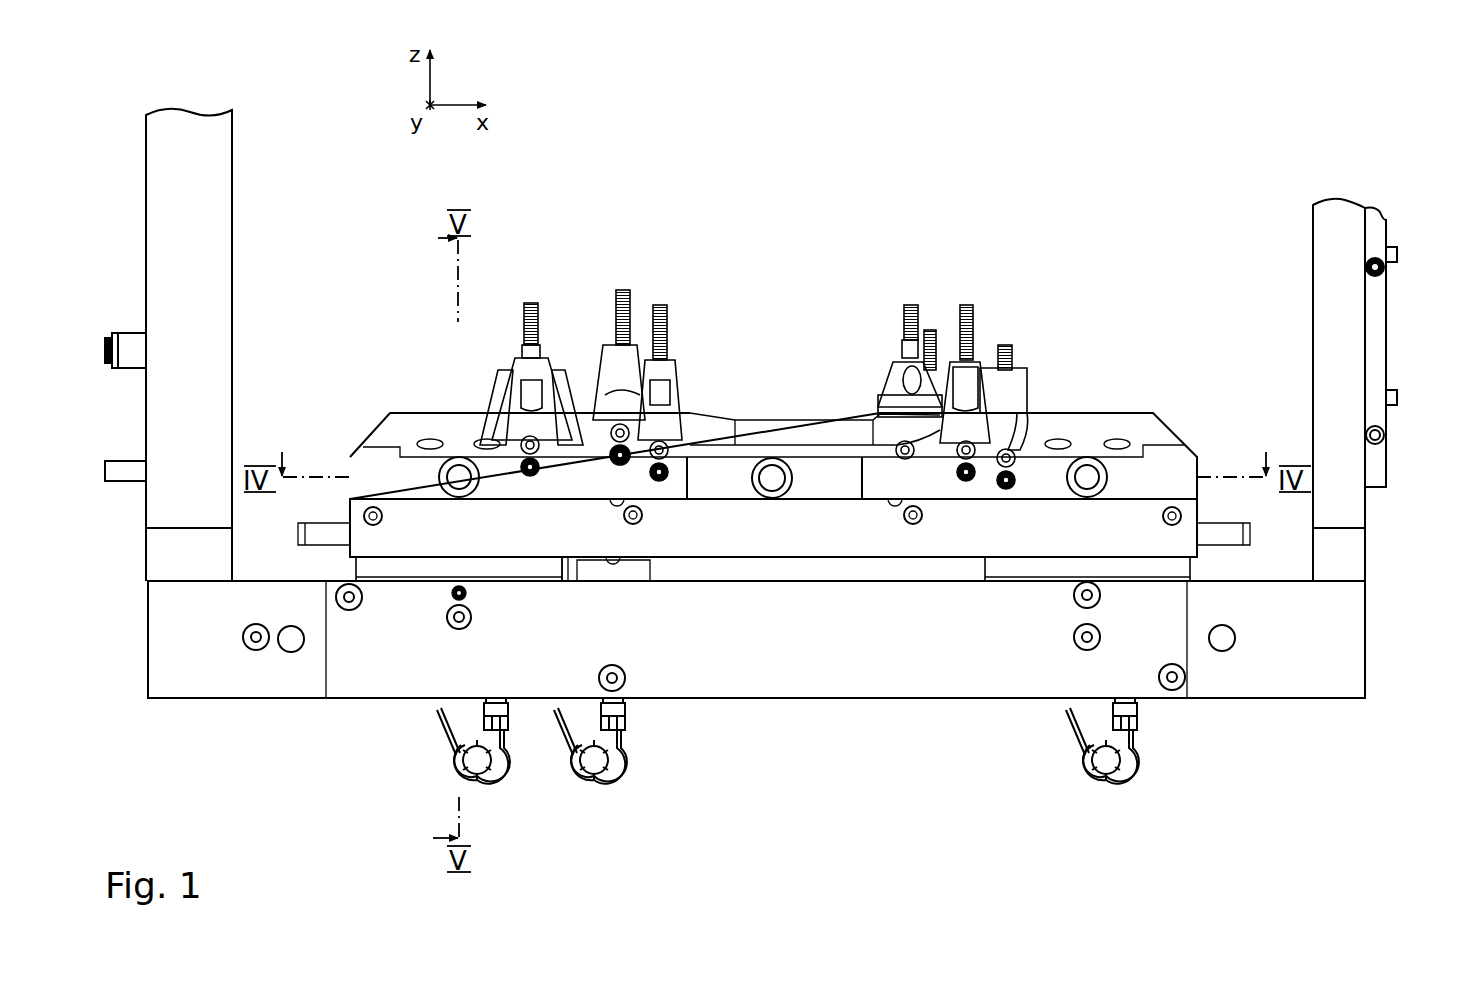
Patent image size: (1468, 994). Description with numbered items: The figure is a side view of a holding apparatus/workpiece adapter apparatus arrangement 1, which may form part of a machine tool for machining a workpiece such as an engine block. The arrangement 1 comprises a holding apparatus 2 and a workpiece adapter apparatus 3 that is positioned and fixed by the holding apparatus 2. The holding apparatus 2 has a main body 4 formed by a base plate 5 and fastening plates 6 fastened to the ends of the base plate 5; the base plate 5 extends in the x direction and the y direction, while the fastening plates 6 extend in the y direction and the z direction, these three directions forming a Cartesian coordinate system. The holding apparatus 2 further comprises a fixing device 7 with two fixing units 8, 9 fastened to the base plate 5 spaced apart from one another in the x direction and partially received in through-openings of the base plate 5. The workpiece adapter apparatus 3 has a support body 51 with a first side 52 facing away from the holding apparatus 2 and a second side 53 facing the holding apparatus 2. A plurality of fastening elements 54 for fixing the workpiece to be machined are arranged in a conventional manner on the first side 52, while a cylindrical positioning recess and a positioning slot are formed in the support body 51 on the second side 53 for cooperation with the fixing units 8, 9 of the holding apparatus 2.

The holding apparatus/workpiece adapter apparatus arrangement 1 is at (1131, 158).
The holding apparatus 2 is at (1310, 228).
The workpiece adapter apparatus 3 is at (1051, 366).
The main body 4 is at (236, 226).
The base plate 5 is at (1273, 705).
The fastening plates 6 is at (158, 226).
The fixing device 7 is at (509, 592).
The fixing unit 8 is at (413, 565).
The fixing unit 9 is at (1130, 564).
The support body 51 is at (807, 416).
The first side 52 is at (752, 413).
The second side 53 is at (816, 557).
The fastening elements 54 is at (535, 322).